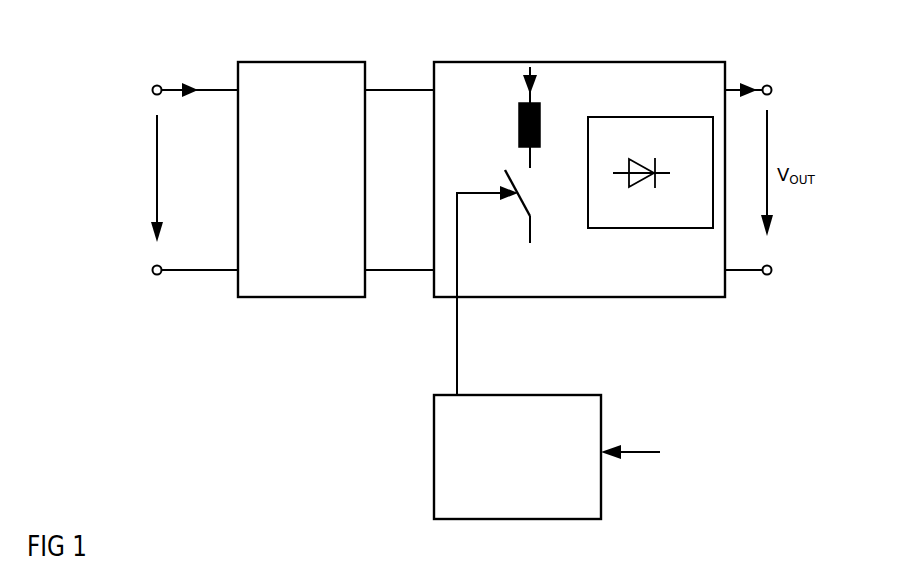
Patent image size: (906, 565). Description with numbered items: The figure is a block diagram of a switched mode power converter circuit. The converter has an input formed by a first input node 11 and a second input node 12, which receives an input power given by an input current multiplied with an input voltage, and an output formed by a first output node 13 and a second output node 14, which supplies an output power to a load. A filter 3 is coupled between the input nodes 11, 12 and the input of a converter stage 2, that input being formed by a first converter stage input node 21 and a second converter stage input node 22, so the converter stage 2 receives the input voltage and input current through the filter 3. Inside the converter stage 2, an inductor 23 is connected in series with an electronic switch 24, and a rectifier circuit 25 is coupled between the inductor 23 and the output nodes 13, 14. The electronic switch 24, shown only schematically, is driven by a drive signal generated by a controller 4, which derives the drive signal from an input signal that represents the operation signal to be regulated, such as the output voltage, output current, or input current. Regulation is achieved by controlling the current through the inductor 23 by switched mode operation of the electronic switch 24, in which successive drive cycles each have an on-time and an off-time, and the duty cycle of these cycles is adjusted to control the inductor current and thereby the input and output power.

The converter stage 2 is at (585, 62).
The filter 3 is at (297, 62).
The controller 4 is at (528, 395).
The first input node 11 is at (153, 86).
The second input node 12 is at (153, 275).
The first output node 13 is at (771, 86).
The second output node 14 is at (771, 274).
The first converter stage input node 21 is at (412, 88).
The second converter stage input node 22 is at (412, 272).
The inductor 23 is at (519, 128).
The electronic switch 24 is at (525, 191).
The rectifier circuit 25 is at (622, 117).